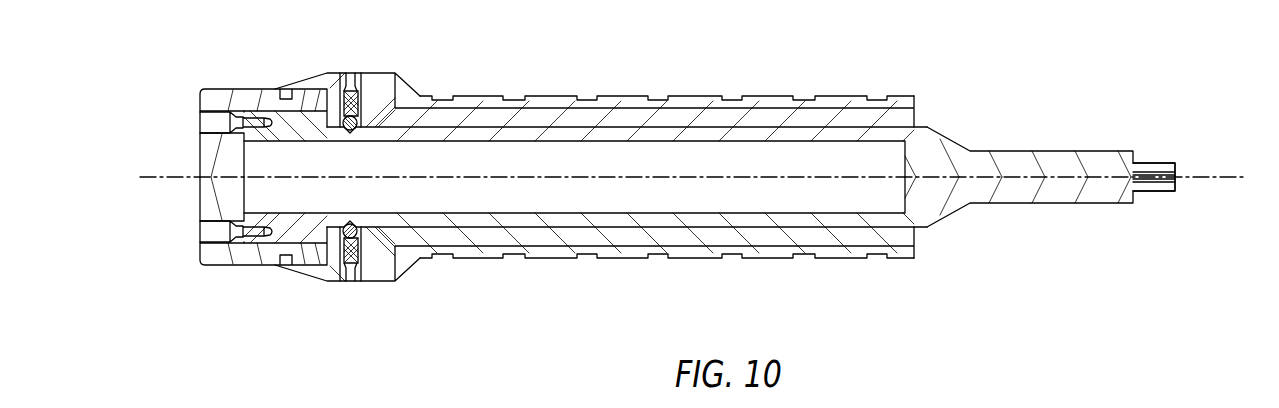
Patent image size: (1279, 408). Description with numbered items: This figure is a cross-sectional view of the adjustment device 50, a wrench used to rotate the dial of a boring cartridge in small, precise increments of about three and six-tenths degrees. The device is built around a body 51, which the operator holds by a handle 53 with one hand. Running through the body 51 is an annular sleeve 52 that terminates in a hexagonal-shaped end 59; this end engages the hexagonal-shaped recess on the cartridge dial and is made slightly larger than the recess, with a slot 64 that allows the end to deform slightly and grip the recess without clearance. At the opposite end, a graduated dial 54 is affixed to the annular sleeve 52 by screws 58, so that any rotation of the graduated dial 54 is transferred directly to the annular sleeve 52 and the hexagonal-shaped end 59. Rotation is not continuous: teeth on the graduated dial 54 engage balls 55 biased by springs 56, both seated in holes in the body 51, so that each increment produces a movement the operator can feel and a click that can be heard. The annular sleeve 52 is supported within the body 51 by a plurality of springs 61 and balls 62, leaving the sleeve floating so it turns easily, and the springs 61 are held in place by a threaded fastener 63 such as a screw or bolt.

The adjustment device 50 is at (856, 42).
The body 51 is at (375, 288).
The annular sleeve 52 is at (648, 136).
The handle 53 is at (553, 263).
The graduated dial 54 is at (227, 86).
The balls 55 is at (344, 118).
The springs 56 is at (349, 283).
The screws 58 is at (222, 233).
The hexagonal-shaped end 59 is at (1184, 187).
The springs 61 is at (365, 107).
The balls 62 is at (365, 120).
The threaded fastener 63 is at (350, 72).
The slot 64 is at (1154, 175).